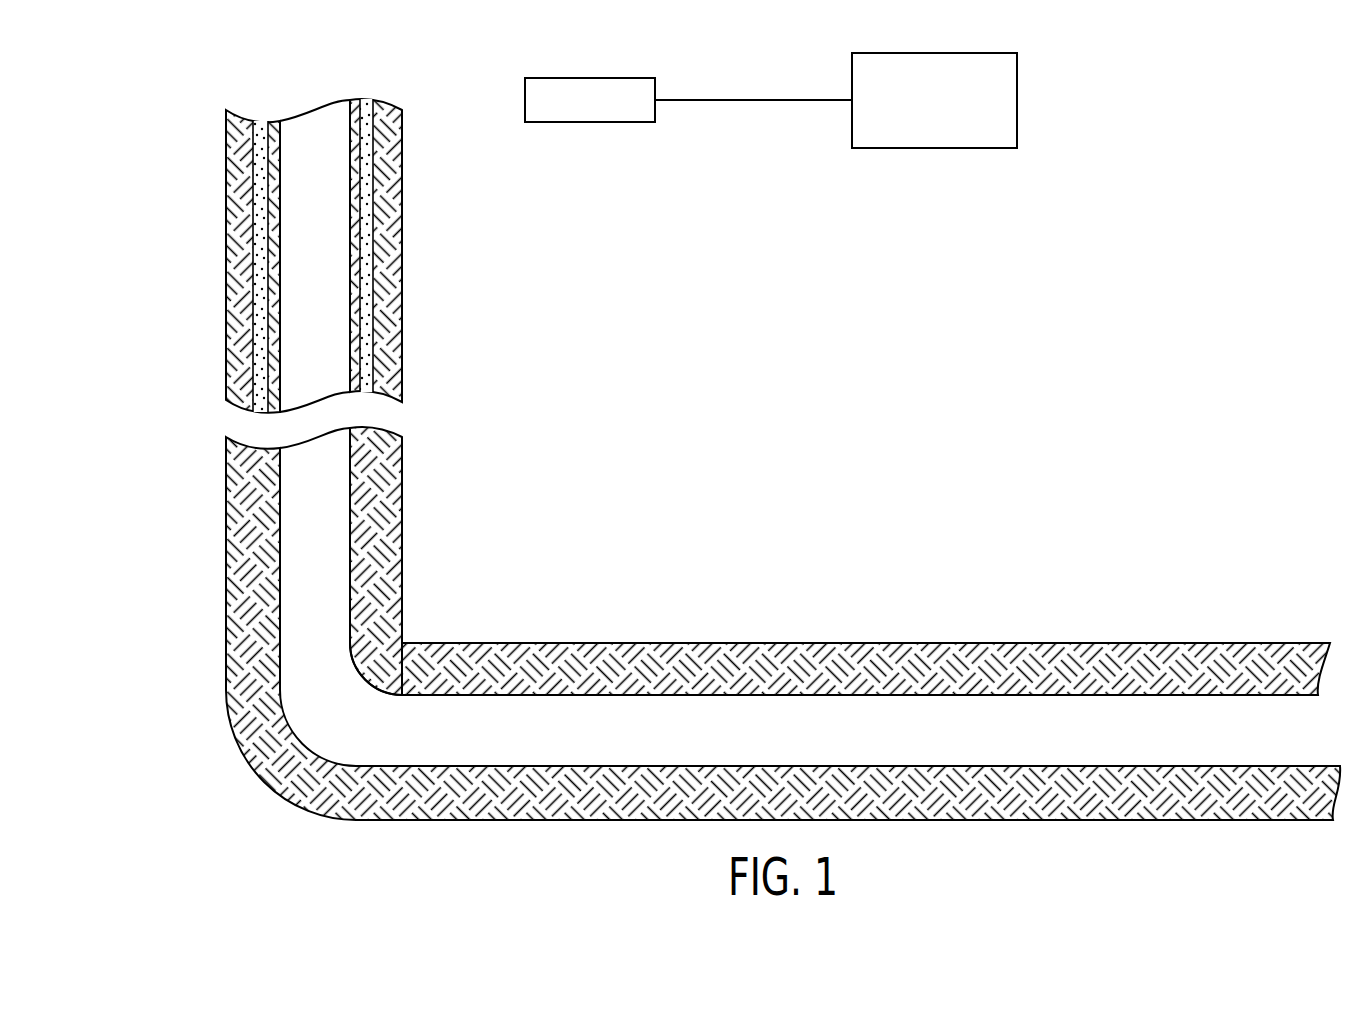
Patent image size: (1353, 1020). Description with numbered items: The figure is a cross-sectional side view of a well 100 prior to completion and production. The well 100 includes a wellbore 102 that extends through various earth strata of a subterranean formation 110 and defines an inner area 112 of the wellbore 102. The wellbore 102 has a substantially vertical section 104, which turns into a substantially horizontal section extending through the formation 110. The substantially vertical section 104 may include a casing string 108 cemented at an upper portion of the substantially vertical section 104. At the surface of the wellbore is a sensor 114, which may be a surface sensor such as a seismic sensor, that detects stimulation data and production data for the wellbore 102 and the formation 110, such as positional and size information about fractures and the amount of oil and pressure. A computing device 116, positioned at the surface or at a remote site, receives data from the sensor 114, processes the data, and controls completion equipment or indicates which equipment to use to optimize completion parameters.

The well 100 is at (192, 141).
The wellbore 102 is at (352, 583).
The substantially vertical section 104 is at (352, 500).
The casing string 108 is at (355, 290).
The subterranean formation 110 is at (757, 383).
The inner area 112 is at (323, 632).
The sensor 114 is at (607, 113).
The computing device 116 is at (951, 113).